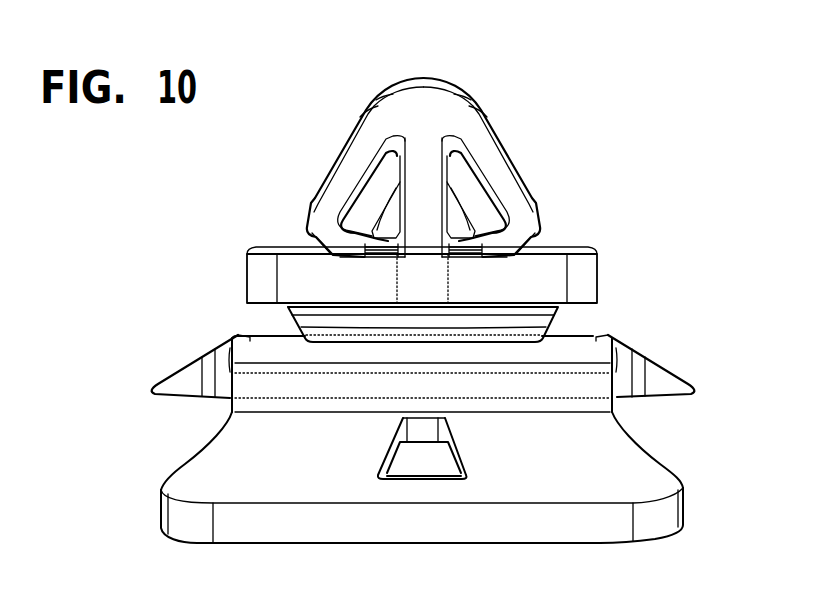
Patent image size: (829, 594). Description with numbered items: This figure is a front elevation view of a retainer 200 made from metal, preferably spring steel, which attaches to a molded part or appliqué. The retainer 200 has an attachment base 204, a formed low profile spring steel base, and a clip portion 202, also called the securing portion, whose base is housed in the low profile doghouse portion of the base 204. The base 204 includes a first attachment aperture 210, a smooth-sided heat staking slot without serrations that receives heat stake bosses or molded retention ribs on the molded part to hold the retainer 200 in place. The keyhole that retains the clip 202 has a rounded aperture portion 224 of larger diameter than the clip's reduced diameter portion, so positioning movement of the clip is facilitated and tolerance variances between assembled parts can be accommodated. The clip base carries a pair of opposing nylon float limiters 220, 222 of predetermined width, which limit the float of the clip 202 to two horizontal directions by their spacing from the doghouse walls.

The retainer 200 is at (697, 116).
The clip portion 202 is at (443, 82).
The attachment base 204 is at (212, 480).
The first attachment aperture 210 is at (413, 478).
The float limiter 220 is at (672, 362).
The float limiter 222 is at (183, 378).
The rounded aperture portion 224 is at (262, 282).